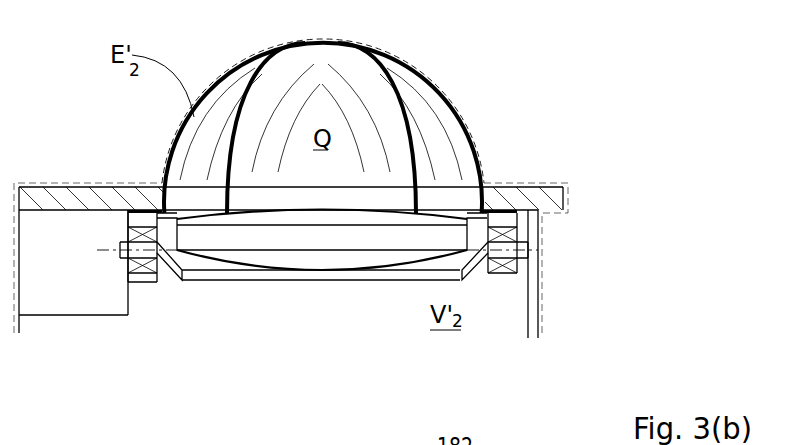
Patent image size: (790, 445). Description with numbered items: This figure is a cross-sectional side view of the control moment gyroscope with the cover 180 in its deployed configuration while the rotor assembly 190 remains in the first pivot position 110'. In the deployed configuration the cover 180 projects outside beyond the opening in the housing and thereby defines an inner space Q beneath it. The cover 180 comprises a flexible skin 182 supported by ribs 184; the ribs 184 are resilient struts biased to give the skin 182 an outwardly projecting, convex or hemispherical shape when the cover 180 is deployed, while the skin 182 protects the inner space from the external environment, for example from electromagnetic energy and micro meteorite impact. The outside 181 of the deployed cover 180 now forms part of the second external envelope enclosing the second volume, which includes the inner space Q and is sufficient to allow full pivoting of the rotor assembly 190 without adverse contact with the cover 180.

The cover 180 is at (435, 88).
The outside of the cover 181 is at (420, 72).
The flexible skin 182 is at (240, 83).
The ribs 184 is at (413, 155).
The first pivot position 110' is at (368, 199).
The rotor assembly 190 is at (442, 238).